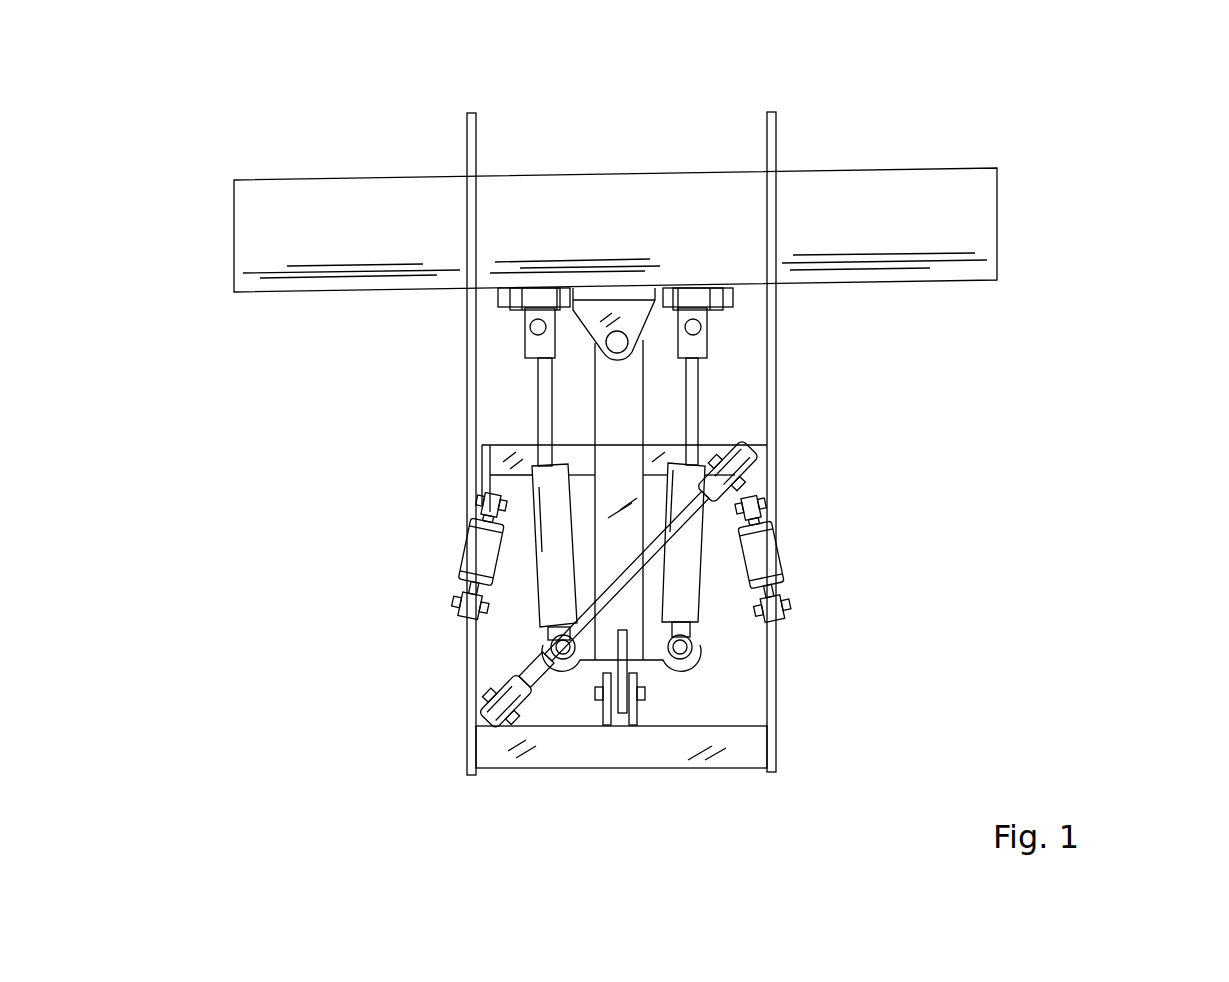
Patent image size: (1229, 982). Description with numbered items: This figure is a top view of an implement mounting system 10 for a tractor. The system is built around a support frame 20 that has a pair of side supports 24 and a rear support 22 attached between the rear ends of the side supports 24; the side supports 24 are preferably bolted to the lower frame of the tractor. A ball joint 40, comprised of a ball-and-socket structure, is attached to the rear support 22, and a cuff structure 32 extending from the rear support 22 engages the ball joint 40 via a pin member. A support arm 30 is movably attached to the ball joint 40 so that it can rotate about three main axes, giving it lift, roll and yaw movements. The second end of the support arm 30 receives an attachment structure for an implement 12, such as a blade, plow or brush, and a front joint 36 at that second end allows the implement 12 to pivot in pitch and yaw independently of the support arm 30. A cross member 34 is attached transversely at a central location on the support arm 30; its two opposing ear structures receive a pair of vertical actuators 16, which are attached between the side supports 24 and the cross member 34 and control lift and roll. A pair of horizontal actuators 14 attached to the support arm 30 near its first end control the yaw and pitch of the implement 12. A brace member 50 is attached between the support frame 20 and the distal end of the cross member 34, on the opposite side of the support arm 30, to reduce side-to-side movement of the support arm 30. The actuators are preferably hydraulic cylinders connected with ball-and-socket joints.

The implement mounting system 10 is at (1072, 313).
The implement 12 is at (368, 200).
The horizontal actuators 14 is at (555, 603).
The vertical actuators 16 is at (483, 543).
The support frame 20 is at (785, 145).
The rear support 22 is at (583, 760).
The side supports 24 is at (468, 415).
The support arm 30 is at (613, 413).
The cuff structure 32 is at (635, 720).
The cross member 34 is at (735, 430).
The front joint 36 is at (617, 342).
The ball joint 40 is at (610, 717).
The brace member 50 is at (540, 670).